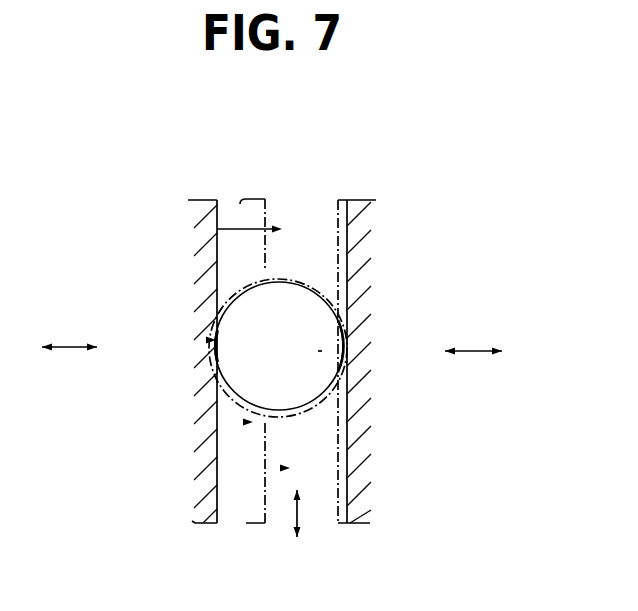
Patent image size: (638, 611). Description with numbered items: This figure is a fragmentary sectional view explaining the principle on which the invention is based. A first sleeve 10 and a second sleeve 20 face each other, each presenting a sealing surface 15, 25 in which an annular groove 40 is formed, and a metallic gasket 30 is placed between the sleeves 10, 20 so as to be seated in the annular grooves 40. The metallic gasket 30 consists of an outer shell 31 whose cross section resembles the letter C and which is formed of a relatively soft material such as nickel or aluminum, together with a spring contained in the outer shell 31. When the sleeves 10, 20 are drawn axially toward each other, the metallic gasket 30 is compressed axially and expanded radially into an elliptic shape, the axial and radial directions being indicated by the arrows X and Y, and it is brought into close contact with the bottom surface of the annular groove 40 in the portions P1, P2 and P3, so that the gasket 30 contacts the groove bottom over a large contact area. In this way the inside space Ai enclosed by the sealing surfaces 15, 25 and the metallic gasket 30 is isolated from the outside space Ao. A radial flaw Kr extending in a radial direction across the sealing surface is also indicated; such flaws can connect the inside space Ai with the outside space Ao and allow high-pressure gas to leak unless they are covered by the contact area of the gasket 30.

The first sleeve 10 is at (204, 195).
The sealing surface 15 is at (264, 197).
The second sleeve 20 is at (358, 195).
The sealing surface 25 is at (338, 233).
The metallic gasket 30 is at (345, 300).
The outer shell 31 is at (318, 351).
The annular groove 40 is at (271, 276).
The outside space Ao is at (217, 229).
The inside space Ai is at (282, 468).
The contact portion P1 is at (210, 339).
The contact portion P2 is at (238, 271).
The contact portion P3 is at (245, 422).
The radial flaw Kr is at (215, 366).
The X direction X is at (272, 334).
The Y direction Y is at (306, 513).